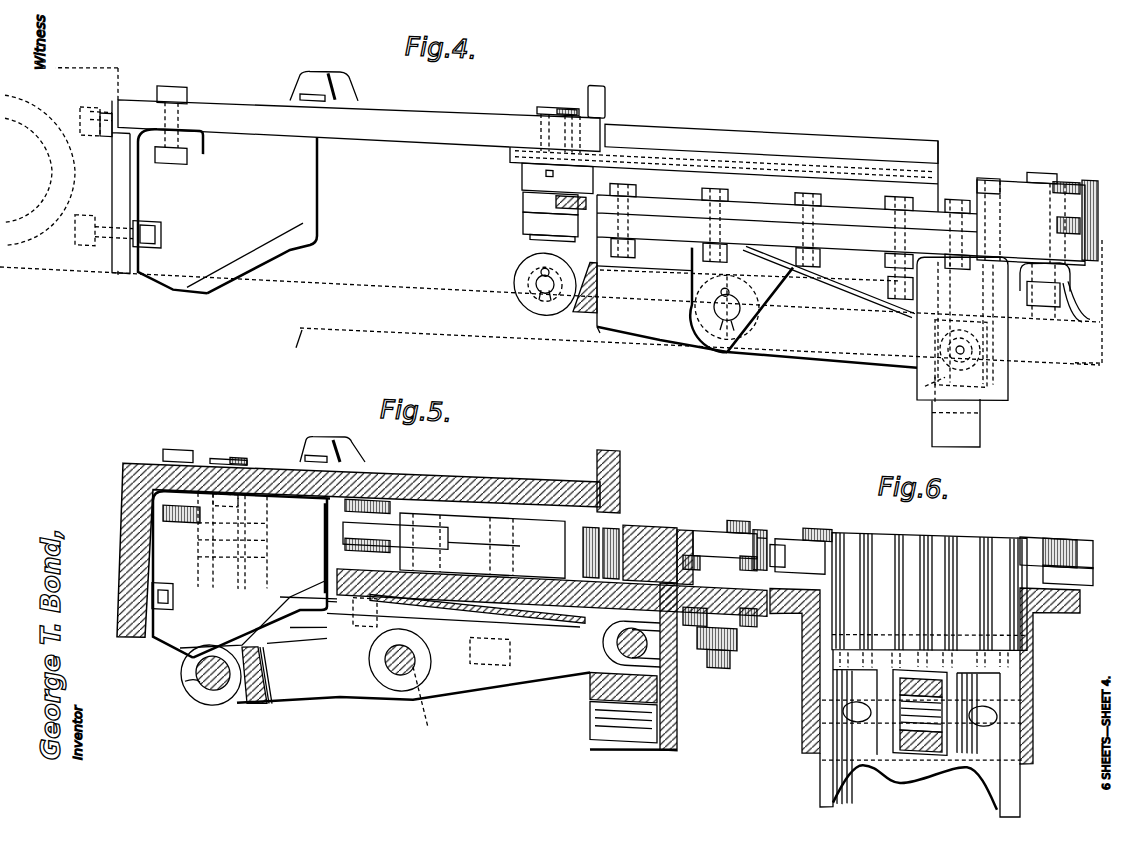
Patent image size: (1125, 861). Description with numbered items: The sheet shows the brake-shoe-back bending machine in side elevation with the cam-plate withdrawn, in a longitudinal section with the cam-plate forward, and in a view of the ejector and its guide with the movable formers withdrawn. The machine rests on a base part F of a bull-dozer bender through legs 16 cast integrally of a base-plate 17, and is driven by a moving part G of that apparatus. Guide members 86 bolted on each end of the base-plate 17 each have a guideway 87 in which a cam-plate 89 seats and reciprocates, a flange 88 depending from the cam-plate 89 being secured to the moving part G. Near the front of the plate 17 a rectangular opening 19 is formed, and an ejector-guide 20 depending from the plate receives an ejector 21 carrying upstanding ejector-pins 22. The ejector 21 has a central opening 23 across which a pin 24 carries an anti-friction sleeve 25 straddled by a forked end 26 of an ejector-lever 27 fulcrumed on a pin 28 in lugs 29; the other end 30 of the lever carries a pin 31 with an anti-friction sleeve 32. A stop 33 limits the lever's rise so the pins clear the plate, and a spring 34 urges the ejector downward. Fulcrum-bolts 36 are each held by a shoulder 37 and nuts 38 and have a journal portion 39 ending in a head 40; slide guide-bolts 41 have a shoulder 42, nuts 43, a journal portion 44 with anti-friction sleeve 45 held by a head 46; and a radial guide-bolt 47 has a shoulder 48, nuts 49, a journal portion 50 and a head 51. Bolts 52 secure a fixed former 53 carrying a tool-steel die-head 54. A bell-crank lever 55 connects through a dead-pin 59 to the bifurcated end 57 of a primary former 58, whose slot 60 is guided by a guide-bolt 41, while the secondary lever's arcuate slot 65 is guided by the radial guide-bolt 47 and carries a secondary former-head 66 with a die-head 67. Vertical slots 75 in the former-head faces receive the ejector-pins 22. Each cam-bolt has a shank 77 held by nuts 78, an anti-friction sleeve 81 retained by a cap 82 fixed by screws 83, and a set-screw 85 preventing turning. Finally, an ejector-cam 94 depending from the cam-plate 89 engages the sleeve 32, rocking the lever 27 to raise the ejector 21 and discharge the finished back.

In FIG. 4, the legs 16 is at (600, 303).
In FIG. 5, the legs 16 is at (740, 643).
In FIG. 4, the base-plate 17 is at (645, 196).
In FIG. 5, the base-plate 17 is at (448, 583).
In FIG. 6, the base-plate 17 is at (809, 634).
In FIG. 5, the rectangular opening 19 is at (590, 610).
In FIG. 4, the ejector-guide 20 is at (1008, 337).
In FIG. 5, the ejector-guide 20 is at (680, 701).
In FIG. 6, the ejector-guide 20 is at (810, 650).
In FIG. 4, the ejector 21 is at (981, 424).
In FIG. 5, the ejector 21 is at (600, 700).
In FIG. 6, the ejector 21 is at (1010, 648).
In FIG. 5, the ejector-pins 22 is at (640, 488).
In FIG. 6, the ejector-pins 22 is at (930, 650).
In FIG. 4, the central opening 23 is at (922, 403).
In FIG. 5, the central opening 23 is at (700, 691).
In FIG. 6, the central opening 23 is at (877, 783).
In FIG. 4, the pin 24 is at (997, 351).
In FIG. 5, the pin 24 is at (615, 629).
In FIG. 6, the pin 24 is at (1010, 674).
In FIG. 4, the anti-friction sleeve 25 is at (995, 322).
In FIG. 5, the anti-friction sleeve 25 is at (605, 660).
In FIG. 6, the anti-friction sleeve 25 is at (918, 706).
In FIG. 4, the forked end 26 is at (916, 387).
In FIG. 5, the forked end 26 is at (704, 713).
In FIG. 6, the forked end 26 is at (935, 708).
In FIG. 4, the ejector-lever 27 is at (794, 318).
In FIG. 5, the ejector-lever 27 is at (330, 684).
In FIG. 4, the pin 28 is at (718, 268).
In FIG. 5, the pin 28 is at (395, 655).
In FIG. 4, the lugs 29 is at (713, 277).
In FIG. 5, the lugs 29 is at (437, 678).
In FIG. 4, the other end 30 is at (520, 271).
In FIG. 5, the other end 30 is at (240, 692).
In FIG. 4, the pin 31 is at (537, 256).
In FIG. 5, the pin 31 is at (212, 694).
In FIG. 4, the anti-friction sleeve 32 is at (520, 257).
In FIG. 5, the anti-friction sleeve 32 is at (195, 675).
In FIG. 5, the stop 33 is at (290, 576).
In FIG. 4, the spring 34 is at (818, 255).
In FIG. 5, the spring 34 is at (490, 584).
In FIG. 4, the fulcrum-bolts 36 is at (880, 266).
In FIG. 5, the fulcrum-bolts 36 is at (380, 461).
In FIG. 5, the shoulder 37 is at (325, 524).
In FIG. 5, the nuts 38 is at (340, 608).
In FIG. 5, the journal portion 39 is at (300, 505).
In FIG. 5, the head 40 is at (400, 470).
In FIG. 5, the slide guide-bolts 41 is at (540, 473).
In FIG. 5, the shoulder 42 is at (605, 495).
In FIG. 4, the nuts 43 is at (1080, 266).
In FIG. 5, the nuts 43 is at (505, 620).
In FIG. 5, the journal portion 44 is at (500, 537).
In FIG. 5, the anti-friction sleeve 45 is at (505, 475).
In FIG. 5, the head 46 is at (572, 466).
In FIG. 4, the radial guide-bolt 47 is at (1065, 128).
In FIG. 5, the radial guide-bolt 47 is at (742, 483).
In FIG. 6, the radial guide-bolt 47 is at (830, 498).
In FIG. 4, the shoulder 48 is at (1031, 222).
In FIG. 6, the nuts 49 is at (1075, 516).
In FIG. 4, the journal portion 50 is at (1096, 212).
In FIG. 4, the head 51 is at (1042, 164).
In FIG. 5, the head 51 is at (760, 495).
In FIG. 5, the bolts 52 is at (720, 551).
In FIG. 5, the fixed former 53 is at (690, 520).
In FIG. 5, the die-head 54 is at (685, 497).
In FIG. 6, the die-head 54 is at (940, 498).
In FIG. 5, the bell-crank lever 55 is at (440, 526).
In FIG. 5, the bifurcated end 57 is at (445, 468).
In FIG. 5, the primary former 58 is at (490, 450).
In FIG. 5, the dead-pin 59 is at (450, 472).
In FIG. 5, the slot 60 is at (615, 489).
In FIG. 4, the slot 65 is at (1000, 124).
In FIG. 5, the slot 65 is at (728, 484).
In FIG. 6, the slot 65 is at (815, 488).
In FIG. 6, the secondary former-head 66 is at (855, 497).
In FIG. 6, the die-head 67 is at (1020, 504).
In FIG. 6, the vertical slots 75 is at (905, 500).
In FIG. 4, the shank 77 is at (530, 214).
In FIG. 5, the shank 77 is at (225, 572).
In FIG. 4, the nuts 78 is at (525, 200).
In FIG. 5, the nuts 78 is at (210, 568).
In FIG. 5, the anti-friction sleeve 81 is at (205, 441).
In FIG. 4, the cap 82 is at (542, 81).
In FIG. 5, the cap 82 is at (248, 450).
In FIG. 4, the screws 83 is at (556, 77).
In FIG. 5, the screws 83 is at (232, 446).
In FIG. 4, the set-screw 85 is at (545, 150).
In FIG. 4, the guide members 86 is at (786, 111).
In FIG. 4, the guideway 87 is at (858, 97).
In FIG. 4, the flange 88 is at (122, 191).
In FIG. 5, the flange 88 is at (125, 572).
In FIG. 4, the cam-plate 89 is at (232, 94).
In FIG. 5, the cam-plate 89 is at (298, 445).
In FIG. 4, the ejector-cam 94 is at (320, 174).
In FIG. 5, the ejector-cam 94 is at (170, 641).
In FIG. 4, the base part F is at (295, 348).
In FIG. 4, the moving part G is at (86, 158).